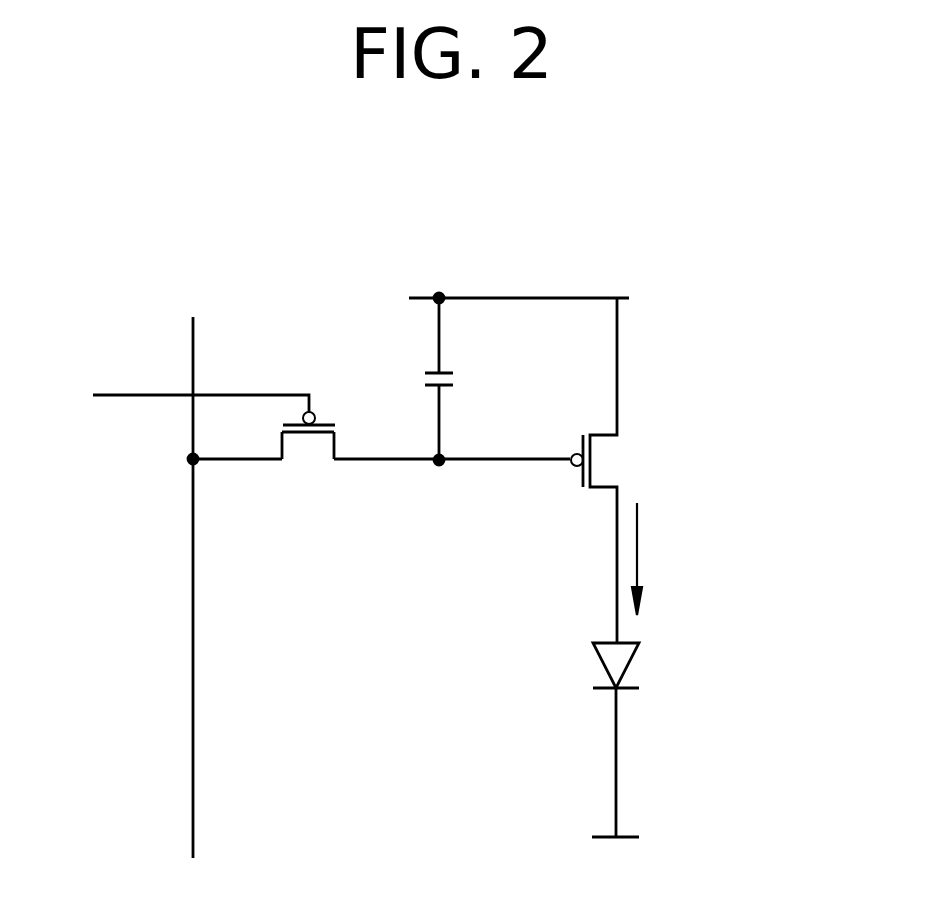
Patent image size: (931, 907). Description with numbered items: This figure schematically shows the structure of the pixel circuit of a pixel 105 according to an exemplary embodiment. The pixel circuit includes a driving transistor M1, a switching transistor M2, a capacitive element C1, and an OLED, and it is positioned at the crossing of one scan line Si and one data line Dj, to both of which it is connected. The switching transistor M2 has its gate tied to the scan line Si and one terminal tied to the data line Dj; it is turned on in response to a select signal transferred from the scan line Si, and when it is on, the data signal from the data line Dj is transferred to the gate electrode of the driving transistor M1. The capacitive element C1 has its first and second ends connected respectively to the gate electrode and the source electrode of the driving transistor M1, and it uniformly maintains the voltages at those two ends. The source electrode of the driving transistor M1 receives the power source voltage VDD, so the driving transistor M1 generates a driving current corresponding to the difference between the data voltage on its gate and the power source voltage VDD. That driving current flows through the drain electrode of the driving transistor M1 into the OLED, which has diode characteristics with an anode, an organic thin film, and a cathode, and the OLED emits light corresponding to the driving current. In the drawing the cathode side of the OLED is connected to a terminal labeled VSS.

The pixel 105 is at (693, 222).
The driving transistor M1 is at (618, 400).
The switching transistor M2 is at (308, 460).
The capacitive element C1 is at (461, 379).
The element OLED is at (665, 667).
The data line Dj is at (196, 563).
The scan line Si is at (178, 396).
The power source voltage VDD is at (523, 271).
The reference voltage VSS is at (606, 787).